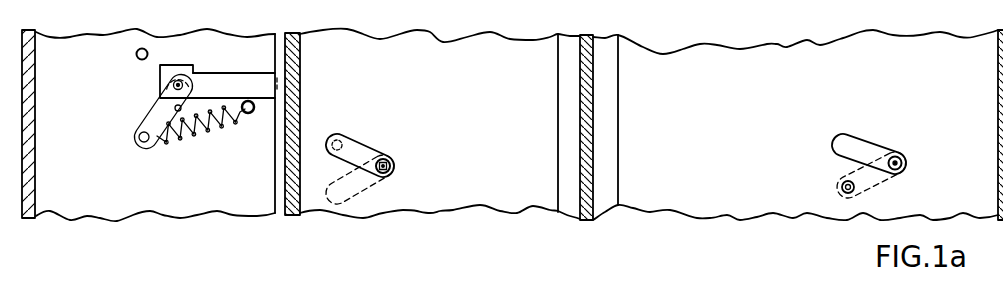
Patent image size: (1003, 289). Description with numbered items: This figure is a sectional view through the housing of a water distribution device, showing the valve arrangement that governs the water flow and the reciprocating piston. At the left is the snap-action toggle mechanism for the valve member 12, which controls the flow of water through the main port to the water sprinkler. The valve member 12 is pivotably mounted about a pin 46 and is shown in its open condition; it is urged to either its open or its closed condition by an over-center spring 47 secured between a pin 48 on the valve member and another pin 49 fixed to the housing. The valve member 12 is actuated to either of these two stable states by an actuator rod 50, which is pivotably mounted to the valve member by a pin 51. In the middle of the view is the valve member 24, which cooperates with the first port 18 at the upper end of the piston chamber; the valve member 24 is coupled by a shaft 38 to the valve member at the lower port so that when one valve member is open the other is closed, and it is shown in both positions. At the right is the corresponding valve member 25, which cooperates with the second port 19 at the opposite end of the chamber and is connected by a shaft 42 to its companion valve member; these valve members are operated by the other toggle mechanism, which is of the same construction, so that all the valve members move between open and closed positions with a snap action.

The valve member 12 is at (155, 117).
The pin 46 is at (189, 96).
The over-center spring 47 is at (202, 133).
The pin 48 is at (147, 143).
The pin 49 is at (255, 113).
The actuator rod 50 is at (245, 80).
The pin 51 is at (163, 85).
The first port 18 is at (334, 139).
The valve member 24 is at (363, 148).
The shaft 38 is at (392, 167).
The valve member 25 is at (868, 150).
The shaft 42 is at (908, 163).
The second port 19 is at (842, 183).